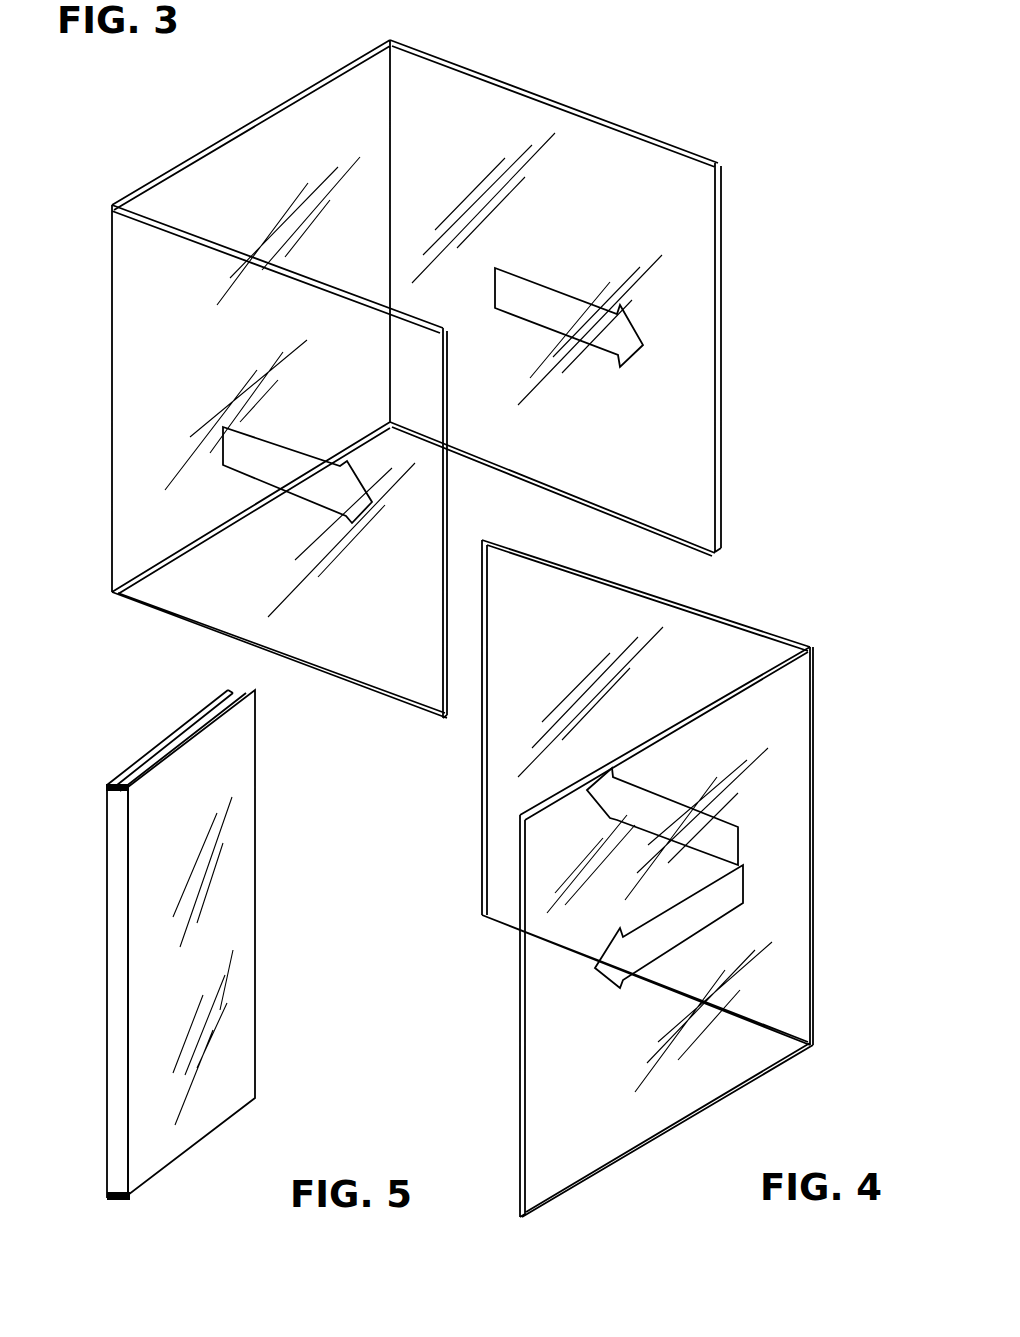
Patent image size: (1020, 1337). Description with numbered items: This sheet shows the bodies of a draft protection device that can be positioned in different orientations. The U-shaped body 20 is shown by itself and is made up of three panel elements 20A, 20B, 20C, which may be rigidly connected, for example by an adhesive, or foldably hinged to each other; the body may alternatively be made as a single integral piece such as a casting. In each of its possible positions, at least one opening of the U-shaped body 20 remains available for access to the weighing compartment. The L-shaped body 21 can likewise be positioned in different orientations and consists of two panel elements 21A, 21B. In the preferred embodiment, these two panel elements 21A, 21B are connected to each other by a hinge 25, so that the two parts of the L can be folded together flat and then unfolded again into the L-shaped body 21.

In FIG. 3, the U-shaped body 20 is at (456, 371).
In FIG. 3, the panel element 20A is at (665, 312).
In FIG. 3, the panel element 20B is at (240, 220).
In FIG. 3, the panel element 20C is at (198, 397).
In FIG. 4, the L-shaped body 21 is at (607, 879).
In FIG. 5, the L-shaped body 21 is at (210, 950).
In FIG. 4, the panel element 21A is at (503, 833).
In FIG. 5, the panel element 21A is at (245, 790).
In FIG. 4, the panel element 21B is at (585, 1073).
In FIG. 5, the panel element 21B is at (160, 735).
In FIG. 5, the hinge 25 is at (125, 1115).